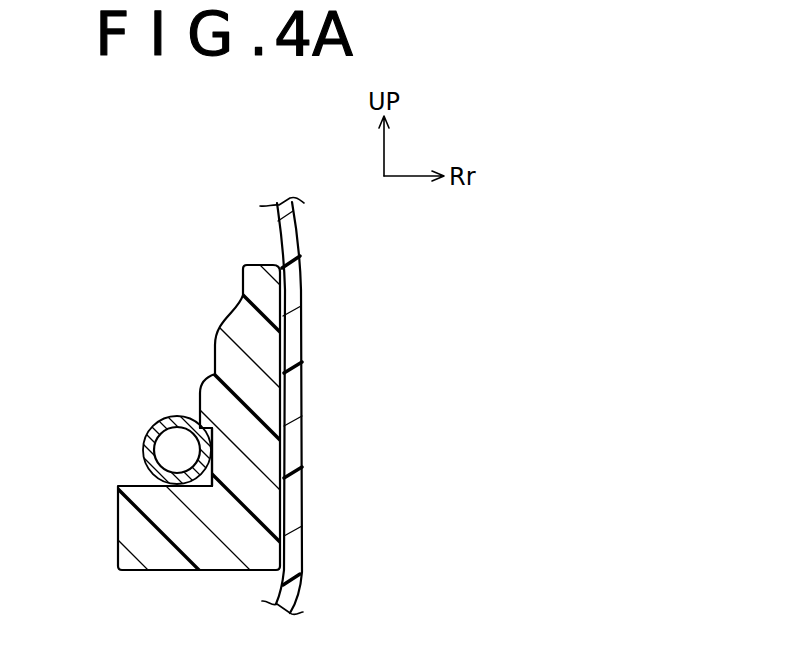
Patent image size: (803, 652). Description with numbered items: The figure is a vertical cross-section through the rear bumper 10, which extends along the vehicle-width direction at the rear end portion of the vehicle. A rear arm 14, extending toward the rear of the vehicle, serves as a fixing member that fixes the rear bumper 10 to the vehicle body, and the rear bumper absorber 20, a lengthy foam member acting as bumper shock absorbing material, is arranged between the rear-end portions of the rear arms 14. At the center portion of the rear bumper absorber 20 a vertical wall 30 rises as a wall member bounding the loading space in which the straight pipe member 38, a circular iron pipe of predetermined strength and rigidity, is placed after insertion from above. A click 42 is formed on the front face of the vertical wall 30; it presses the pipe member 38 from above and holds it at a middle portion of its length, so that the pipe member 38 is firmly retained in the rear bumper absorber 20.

The rear bumper 10 is at (380, 386).
The rear arm 14 is at (302, 480).
The rear bumper absorber 20 is at (103, 527).
The vertical wall 30 is at (265, 345).
The pipe member 38 is at (152, 430).
The click 42 is at (200, 427).